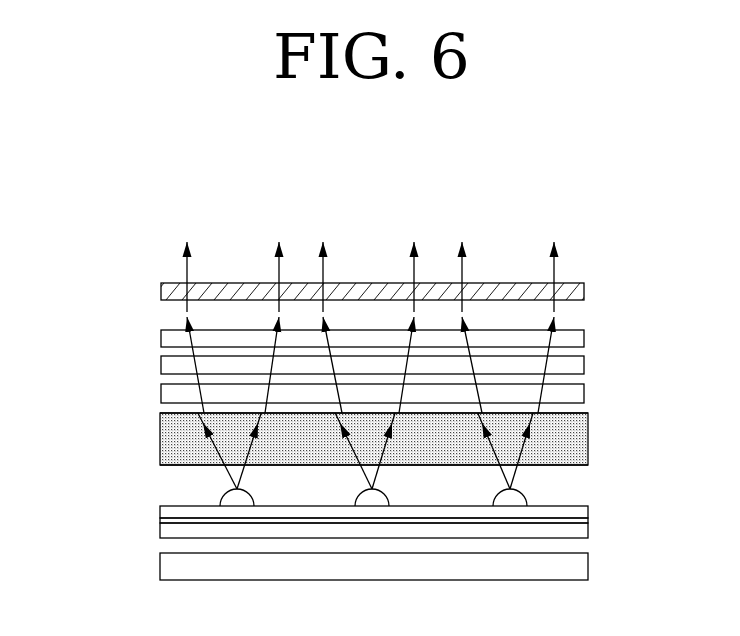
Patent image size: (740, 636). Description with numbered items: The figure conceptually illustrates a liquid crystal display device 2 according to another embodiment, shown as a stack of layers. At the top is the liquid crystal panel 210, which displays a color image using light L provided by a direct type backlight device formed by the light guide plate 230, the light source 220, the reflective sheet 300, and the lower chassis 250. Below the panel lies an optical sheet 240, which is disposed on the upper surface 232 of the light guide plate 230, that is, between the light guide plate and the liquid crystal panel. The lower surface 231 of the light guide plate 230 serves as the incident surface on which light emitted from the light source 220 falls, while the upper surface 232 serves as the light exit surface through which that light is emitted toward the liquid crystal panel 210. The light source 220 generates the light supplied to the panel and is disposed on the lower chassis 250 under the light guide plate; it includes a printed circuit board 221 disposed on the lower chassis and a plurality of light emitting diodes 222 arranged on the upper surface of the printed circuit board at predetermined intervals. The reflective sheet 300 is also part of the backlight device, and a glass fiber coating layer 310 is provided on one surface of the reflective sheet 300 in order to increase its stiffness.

The liquid crystal display device 2 is at (381, 186).
The liquid crystal panel 210 is at (586, 284).
The optical sheet 240 is at (588, 330).
The light guide plate 230 is at (590, 437).
The upper surface 232 is at (582, 413).
The lower surface 231 is at (563, 465).
The light L is at (227, 477).
The light source 220 is at (300, 525).
The light emitting diodes 222 is at (222, 497).
The printed circuit board 221 is at (166, 529).
The reflective sheet 300 is at (590, 508).
The glass fiber coating layer 310 is at (590, 520).
The lower chassis 250 is at (590, 563).